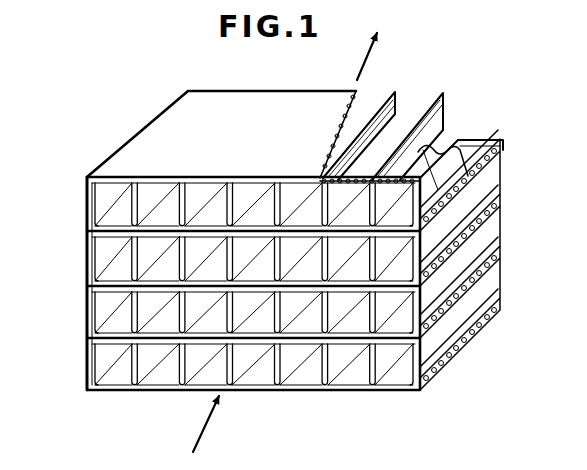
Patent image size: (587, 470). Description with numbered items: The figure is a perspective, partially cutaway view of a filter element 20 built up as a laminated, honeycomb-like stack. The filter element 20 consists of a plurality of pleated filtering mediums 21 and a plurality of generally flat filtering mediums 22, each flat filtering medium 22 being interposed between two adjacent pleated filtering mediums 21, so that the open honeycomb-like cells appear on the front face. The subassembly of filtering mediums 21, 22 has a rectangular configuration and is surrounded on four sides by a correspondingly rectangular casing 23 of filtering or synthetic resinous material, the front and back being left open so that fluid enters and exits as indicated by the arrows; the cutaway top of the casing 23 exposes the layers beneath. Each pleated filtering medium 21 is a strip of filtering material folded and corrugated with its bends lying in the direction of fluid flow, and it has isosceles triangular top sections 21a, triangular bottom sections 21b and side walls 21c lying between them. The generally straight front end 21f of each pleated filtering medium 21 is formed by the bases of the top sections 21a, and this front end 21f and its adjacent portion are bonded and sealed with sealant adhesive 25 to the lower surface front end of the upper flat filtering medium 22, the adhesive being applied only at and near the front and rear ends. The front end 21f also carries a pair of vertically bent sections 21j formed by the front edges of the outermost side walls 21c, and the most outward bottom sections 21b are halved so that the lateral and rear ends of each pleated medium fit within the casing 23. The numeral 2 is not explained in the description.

The filter element 20 is at (194, 62).
The core layer 2 is at (505, 143).
The pleated filtering medium 21 is at (462, 212).
The triangular top section 21a is at (352, 170).
The triangular bottom section 21b is at (457, 158).
The side wall 21c is at (445, 120).
The front end 21f is at (383, 126).
The vertically bent section 21j is at (87, 213).
The flat filtering medium 22 is at (452, 176).
The casing 23 is at (176, 134).
The sealant adhesive 25 is at (478, 141).